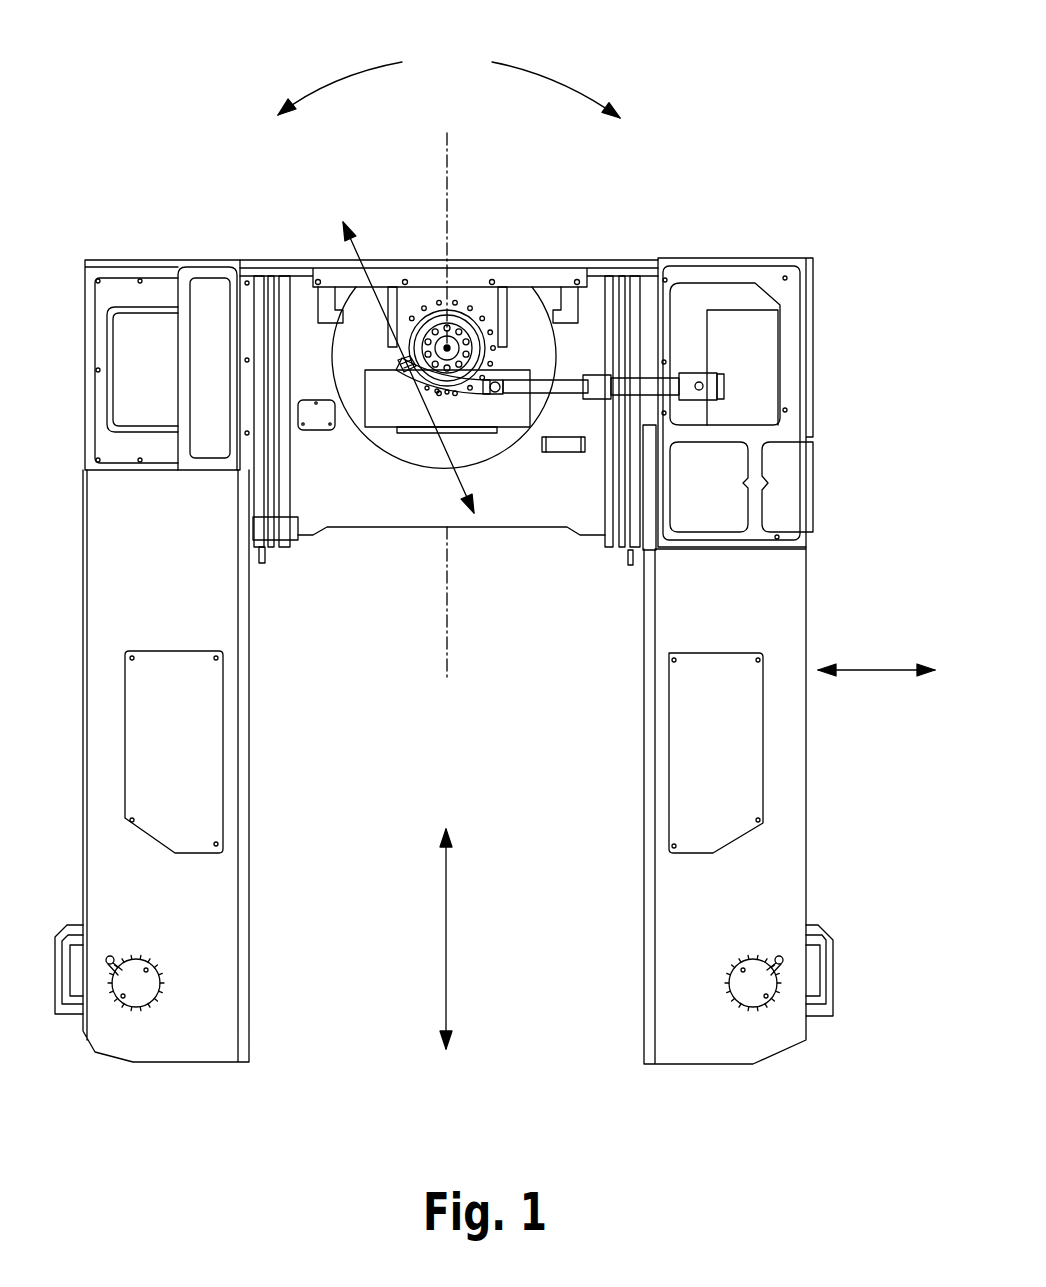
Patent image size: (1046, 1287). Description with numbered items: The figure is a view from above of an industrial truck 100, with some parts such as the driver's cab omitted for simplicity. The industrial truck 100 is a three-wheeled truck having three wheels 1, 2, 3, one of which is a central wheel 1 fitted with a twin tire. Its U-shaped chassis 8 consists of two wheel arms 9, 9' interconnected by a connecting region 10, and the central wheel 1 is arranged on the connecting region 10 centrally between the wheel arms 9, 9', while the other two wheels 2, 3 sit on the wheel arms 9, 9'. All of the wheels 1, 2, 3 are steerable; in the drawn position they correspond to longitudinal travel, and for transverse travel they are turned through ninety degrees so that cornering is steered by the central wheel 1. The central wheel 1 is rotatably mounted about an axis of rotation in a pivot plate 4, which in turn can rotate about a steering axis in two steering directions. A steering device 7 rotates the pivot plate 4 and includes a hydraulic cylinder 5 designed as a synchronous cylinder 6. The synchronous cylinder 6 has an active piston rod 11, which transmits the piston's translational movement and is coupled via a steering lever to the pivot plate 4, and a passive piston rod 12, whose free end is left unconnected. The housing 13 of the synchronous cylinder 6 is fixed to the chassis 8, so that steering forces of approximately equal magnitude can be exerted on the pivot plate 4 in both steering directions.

The industrial truck 100 is at (168, 142).
The central wheel 1 is at (382, 372).
The wheel 2 is at (70, 1014).
The wheel 3 is at (826, 970).
The pivot plate 4 is at (480, 448).
The hydraulic cylinder 5 is at (581, 298).
The synchronous cylinder 6 is at (581, 298).
The steering device 7 is at (717, 357).
The U-shaped chassis 8 is at (769, 557).
The wheel arm 9 is at (193, 661).
The wheel arm 9' is at (695, 805).
The connecting region 10 is at (343, 518).
The active piston rod 11 is at (540, 383).
The passive piston rod 12 is at (738, 387).
The housing 13 is at (738, 367).